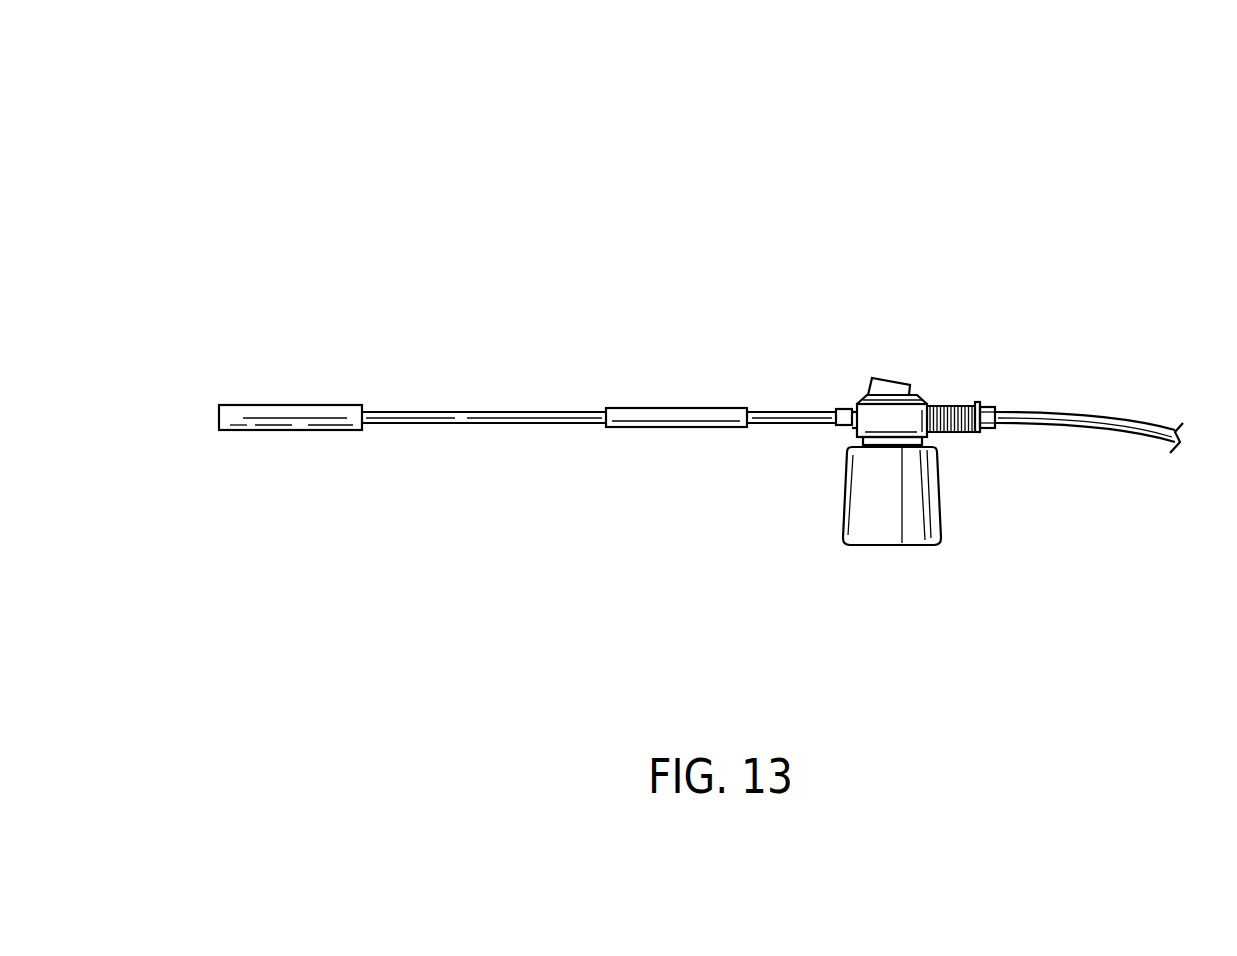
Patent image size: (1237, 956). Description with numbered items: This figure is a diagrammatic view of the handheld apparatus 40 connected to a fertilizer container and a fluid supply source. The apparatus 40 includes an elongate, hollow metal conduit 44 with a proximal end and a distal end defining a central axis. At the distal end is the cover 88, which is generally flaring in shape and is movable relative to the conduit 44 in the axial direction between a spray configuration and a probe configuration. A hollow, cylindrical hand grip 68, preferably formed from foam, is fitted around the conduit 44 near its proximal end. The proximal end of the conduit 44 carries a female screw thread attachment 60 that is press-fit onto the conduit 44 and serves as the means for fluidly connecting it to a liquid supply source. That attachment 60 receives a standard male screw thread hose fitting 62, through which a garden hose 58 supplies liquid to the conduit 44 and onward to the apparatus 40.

The handheld apparatus 40 is at (284, 176).
The cover 88 is at (268, 412).
The conduit 44 is at (485, 412).
The hand grip 68 is at (676, 410).
The female screw thread attachment 60 is at (842, 410).
The male screw thread hose fitting 62 is at (991, 405).
The garden hose 58 is at (1108, 414).